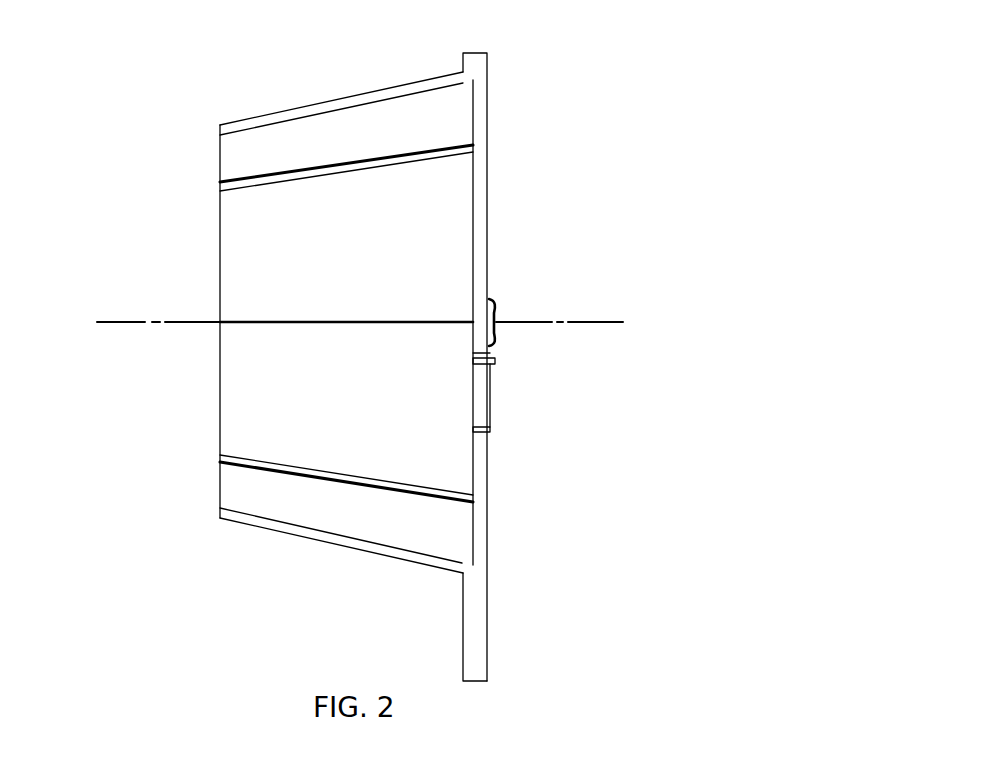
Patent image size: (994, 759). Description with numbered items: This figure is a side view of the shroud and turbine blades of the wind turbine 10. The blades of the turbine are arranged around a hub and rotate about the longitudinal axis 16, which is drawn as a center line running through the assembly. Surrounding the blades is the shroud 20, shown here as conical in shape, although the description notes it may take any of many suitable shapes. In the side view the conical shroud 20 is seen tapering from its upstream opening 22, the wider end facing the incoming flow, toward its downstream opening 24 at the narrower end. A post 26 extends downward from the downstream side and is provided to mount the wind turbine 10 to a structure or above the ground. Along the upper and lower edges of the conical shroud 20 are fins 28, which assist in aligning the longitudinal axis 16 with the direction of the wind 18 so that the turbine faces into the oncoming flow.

The wind turbine 10 is at (275, 97).
The longitudinal axis 16 is at (128, 322).
The wind 18 is at (177, 167).
The shroud 20 is at (345, 251).
The upstream opening 22 is at (217, 412).
The downstream opening 24 is at (502, 253).
The post 26 is at (472, 635).
The fins 28 is at (348, 103).